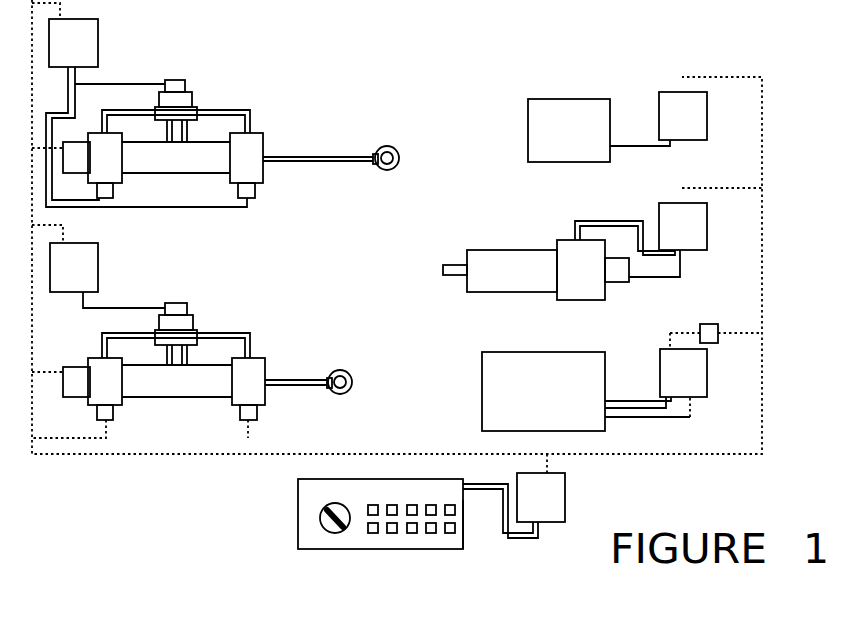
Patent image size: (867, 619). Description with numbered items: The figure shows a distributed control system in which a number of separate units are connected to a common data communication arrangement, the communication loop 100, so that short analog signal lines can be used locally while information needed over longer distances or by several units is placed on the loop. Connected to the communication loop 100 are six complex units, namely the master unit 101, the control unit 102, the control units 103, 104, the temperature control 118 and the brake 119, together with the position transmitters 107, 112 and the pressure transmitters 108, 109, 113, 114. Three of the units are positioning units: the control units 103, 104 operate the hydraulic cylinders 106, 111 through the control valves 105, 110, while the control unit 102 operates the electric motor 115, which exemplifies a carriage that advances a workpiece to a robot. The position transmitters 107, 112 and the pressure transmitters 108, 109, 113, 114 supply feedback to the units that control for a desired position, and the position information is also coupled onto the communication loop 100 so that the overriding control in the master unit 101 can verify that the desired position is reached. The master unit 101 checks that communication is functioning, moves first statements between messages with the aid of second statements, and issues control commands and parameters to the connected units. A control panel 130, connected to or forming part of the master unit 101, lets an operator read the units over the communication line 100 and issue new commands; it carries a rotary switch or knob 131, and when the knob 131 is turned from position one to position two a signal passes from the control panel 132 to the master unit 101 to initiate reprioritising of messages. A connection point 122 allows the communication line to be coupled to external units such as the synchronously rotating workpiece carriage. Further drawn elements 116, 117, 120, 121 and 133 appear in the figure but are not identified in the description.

The communication loop 100 is at (397, 229).
The master unit 101 is at (546, 496).
The control unit for electric motor 102 is at (710, 220).
The control unit 103 is at (146, 113).
The control unit 104 is at (107, 275).
The control valve 105 is at (176, 93).
The hydraulic cylinder 106 is at (189, 130).
The position transmitter 107 is at (75, 153).
The pressure transmitter 108 is at (159, 170).
The pressure transmitter 109 is at (314, 171).
The control valve 110 is at (176, 317).
The hydraulic cylinder 111 is at (200, 353).
The position transmitter 112 is at (63, 369).
The pressure transmitter 113 is at (160, 398).
The pressure transmitter 114 is at (292, 401).
The electric motor 115 is at (500, 258).
The coupling 116 is at (642, 279).
The pump drive 117 is at (616, 275).
The temperature control 118 is at (711, 369).
The brake 119 is at (710, 109).
The power unit 120 is at (586, 379).
The filter 121 is at (599, 117).
The connection point 122 is at (714, 322).
The control panel 130 is at (380, 501).
The rotary switch/knob 131 is at (311, 546).
The control panel 132 is at (470, 510).
The panel housing 133 is at (465, 530).